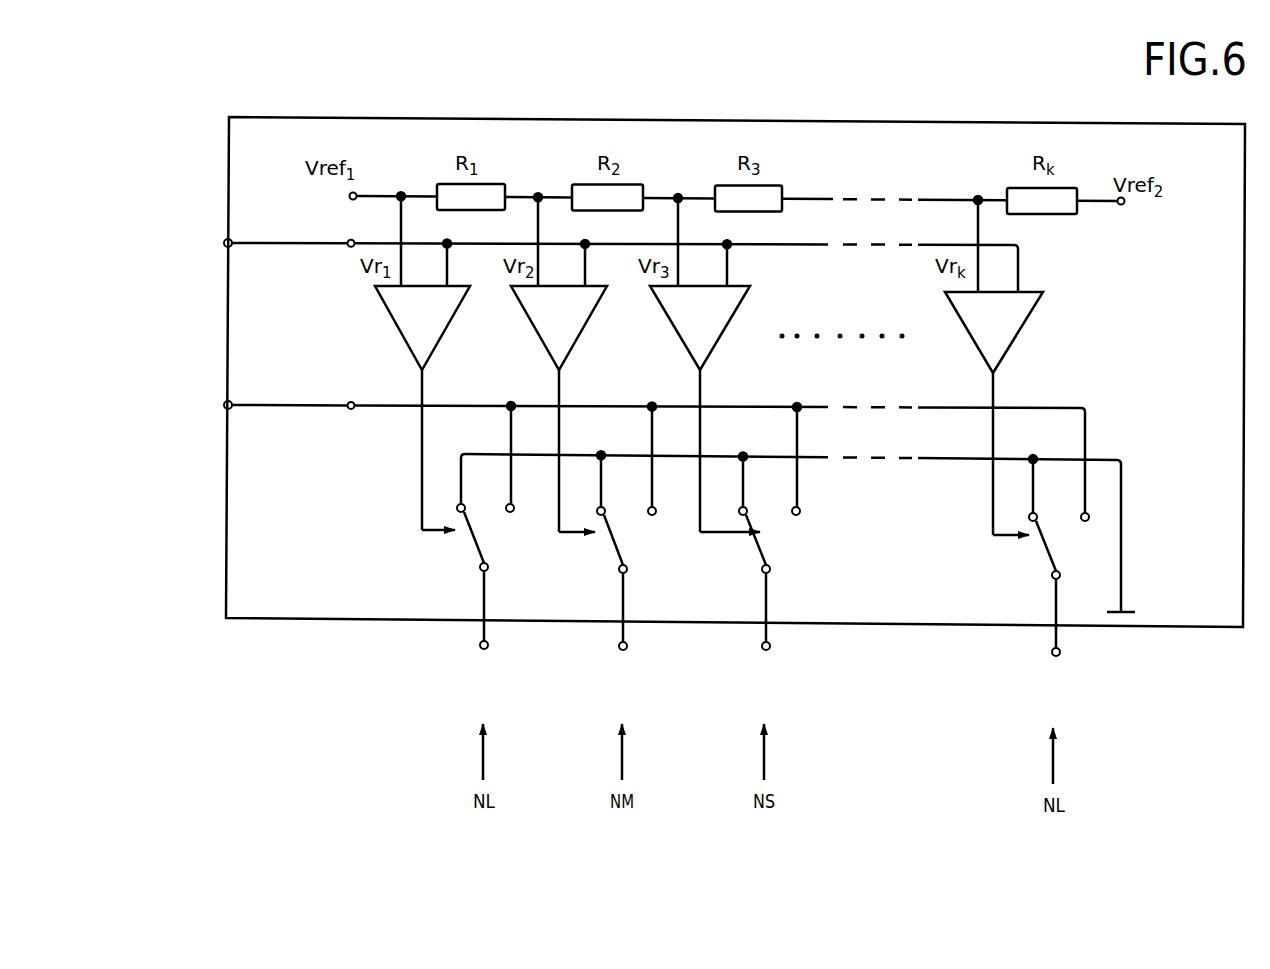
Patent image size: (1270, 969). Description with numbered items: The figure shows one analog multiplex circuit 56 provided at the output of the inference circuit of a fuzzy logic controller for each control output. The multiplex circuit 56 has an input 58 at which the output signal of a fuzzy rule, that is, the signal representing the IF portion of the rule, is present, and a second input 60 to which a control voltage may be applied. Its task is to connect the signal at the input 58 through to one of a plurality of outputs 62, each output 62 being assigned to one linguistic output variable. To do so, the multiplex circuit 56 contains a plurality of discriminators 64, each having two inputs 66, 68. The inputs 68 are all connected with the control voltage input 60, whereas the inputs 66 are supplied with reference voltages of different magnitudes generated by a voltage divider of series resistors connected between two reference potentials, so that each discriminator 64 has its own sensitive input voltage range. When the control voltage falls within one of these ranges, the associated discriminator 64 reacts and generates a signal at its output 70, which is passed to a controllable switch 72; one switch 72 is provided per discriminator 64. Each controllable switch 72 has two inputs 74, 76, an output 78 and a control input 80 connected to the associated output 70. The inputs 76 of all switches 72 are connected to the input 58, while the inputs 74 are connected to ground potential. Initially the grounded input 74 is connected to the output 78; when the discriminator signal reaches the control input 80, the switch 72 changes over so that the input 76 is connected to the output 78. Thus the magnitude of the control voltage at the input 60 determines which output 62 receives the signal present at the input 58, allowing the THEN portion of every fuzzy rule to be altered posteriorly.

The multiplex circuit 56 is at (240, 588).
The input 58 is at (226, 408).
The second input 60 is at (228, 243).
The output 62 is at (479, 647).
The discriminator 64 is at (408, 343).
The input 66 is at (402, 283).
The input 68 is at (448, 283).
The output 70 is at (418, 374).
The controllable switch 72 is at (462, 565).
The input 74 is at (465, 506).
The input 76 is at (513, 506).
The output 78 is at (497, 568).
The control input 80 is at (436, 527).